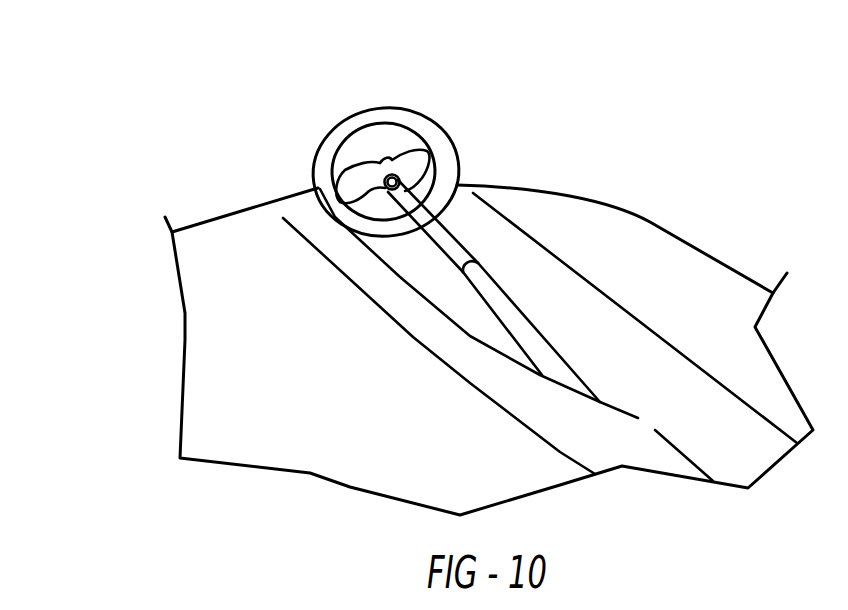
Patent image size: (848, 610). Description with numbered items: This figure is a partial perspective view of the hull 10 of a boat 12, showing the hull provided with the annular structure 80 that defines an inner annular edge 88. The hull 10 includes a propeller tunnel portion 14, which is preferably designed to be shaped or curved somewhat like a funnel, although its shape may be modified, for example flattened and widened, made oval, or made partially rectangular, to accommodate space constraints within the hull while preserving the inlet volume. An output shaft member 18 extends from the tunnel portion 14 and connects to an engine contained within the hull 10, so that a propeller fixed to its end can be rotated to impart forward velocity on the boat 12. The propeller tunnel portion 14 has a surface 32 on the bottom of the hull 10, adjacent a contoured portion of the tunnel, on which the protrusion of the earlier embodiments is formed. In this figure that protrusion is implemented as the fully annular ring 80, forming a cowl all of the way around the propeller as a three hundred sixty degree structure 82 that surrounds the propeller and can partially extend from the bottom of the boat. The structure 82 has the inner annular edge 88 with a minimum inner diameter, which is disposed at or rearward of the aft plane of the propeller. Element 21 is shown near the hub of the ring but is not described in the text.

The hull 10 is at (230, 422).
The boat 12 is at (708, 225).
The propeller tunnel portion 14 is at (528, 270).
The output shaft member 18 is at (543, 362).
The pivot pin and rod 21 is at (352, 185).
The surface 32 is at (450, 298).
The annular ring 80 is at (475, 112).
The 360° structure 82 is at (363, 124).
The inner annular edge 88 is at (447, 156).